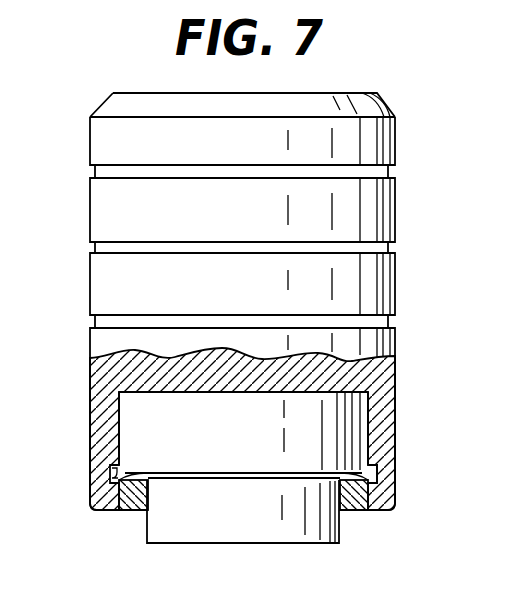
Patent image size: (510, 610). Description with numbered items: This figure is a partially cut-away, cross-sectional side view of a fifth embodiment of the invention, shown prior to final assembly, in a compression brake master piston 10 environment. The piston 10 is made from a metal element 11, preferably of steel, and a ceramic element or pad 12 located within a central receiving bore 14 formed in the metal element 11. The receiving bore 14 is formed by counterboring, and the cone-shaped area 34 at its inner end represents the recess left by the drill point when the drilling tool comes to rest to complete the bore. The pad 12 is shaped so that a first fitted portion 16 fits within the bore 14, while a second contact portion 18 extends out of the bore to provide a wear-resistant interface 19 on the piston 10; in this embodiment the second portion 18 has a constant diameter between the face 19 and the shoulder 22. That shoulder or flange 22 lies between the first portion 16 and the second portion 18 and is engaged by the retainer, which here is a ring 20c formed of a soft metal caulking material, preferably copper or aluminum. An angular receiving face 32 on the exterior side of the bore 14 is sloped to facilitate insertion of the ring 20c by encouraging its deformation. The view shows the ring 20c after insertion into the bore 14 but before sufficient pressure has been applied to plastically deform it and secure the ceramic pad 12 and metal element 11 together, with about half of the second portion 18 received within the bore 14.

The compression brake master piston 10 is at (424, 136).
The metal element 11 is at (397, 220).
The ceramic element or pad 12 is at (350, 418).
The receiving bore 14 is at (360, 527).
The first fitted portion 16 is at (123, 427).
The second contact portion 18 is at (158, 530).
The wear-resistant interface 19 is at (273, 540).
The ring 20c is at (373, 481).
The shoulder or flange 22 is at (115, 477).
The angular receiving face 32 is at (122, 518).
The cone-shaped area 34 is at (240, 387).